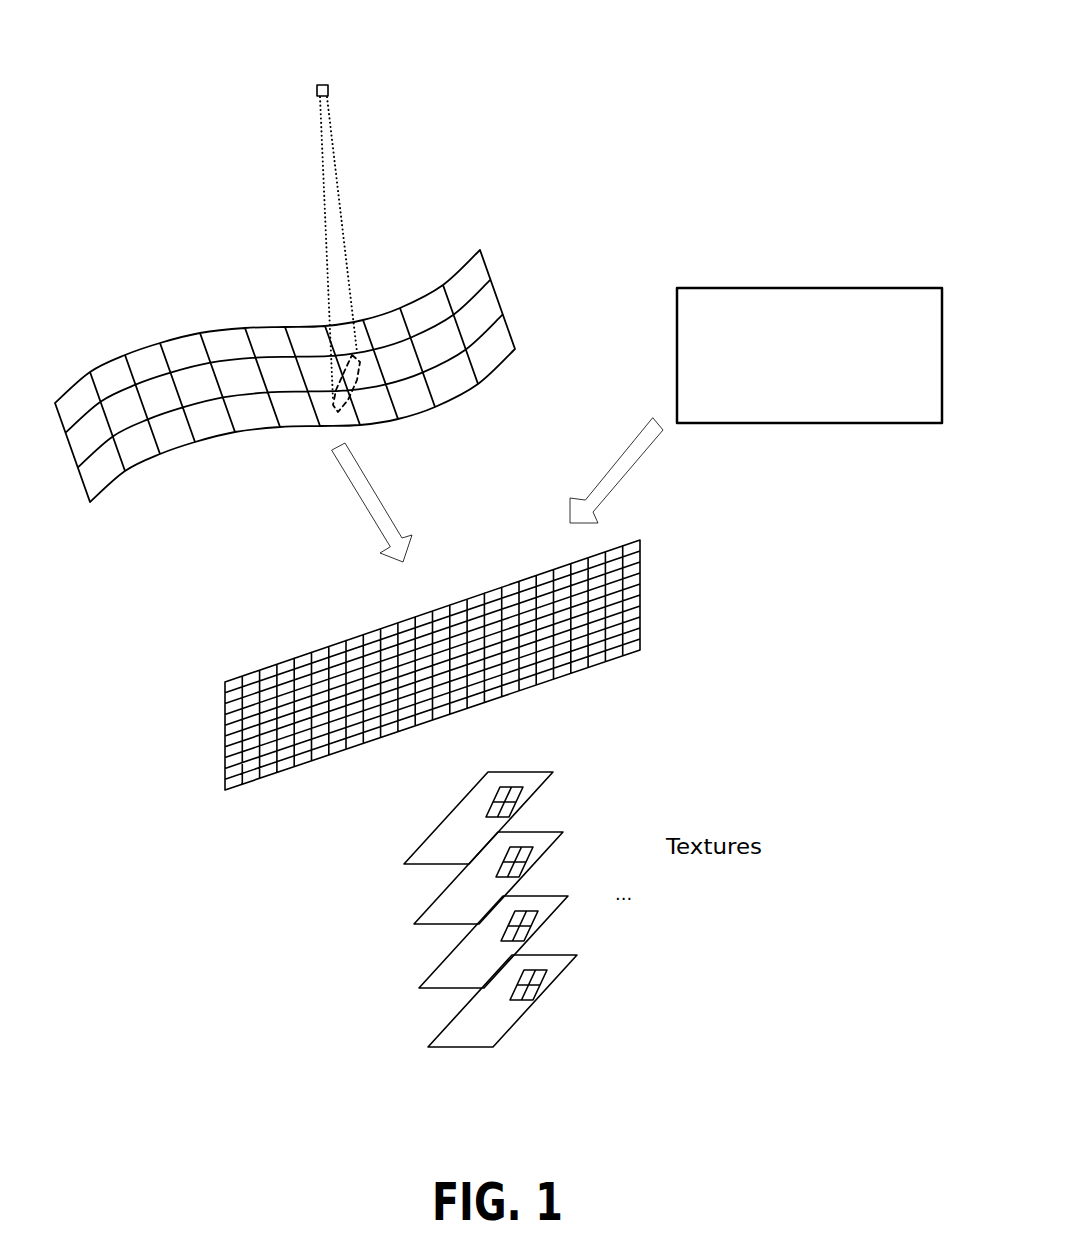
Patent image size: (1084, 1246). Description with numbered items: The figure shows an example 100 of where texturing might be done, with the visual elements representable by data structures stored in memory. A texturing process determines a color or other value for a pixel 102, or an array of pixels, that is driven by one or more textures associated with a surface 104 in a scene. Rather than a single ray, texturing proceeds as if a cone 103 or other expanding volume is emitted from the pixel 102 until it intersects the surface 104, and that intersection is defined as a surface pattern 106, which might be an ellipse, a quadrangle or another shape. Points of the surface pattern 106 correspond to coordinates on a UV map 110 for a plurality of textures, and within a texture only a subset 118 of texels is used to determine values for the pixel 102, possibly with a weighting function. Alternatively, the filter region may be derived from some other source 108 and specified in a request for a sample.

The example of where texturing might be done 100 is at (905, 103).
The pixel 102 is at (328, 84).
The cone 103 is at (349, 238).
The surface 104 is at (489, 262).
The surface pattern 106 is at (363, 381).
The other source 108 is at (808, 288).
The UV map 110 is at (642, 544).
The subset of texels 118 is at (535, 978).